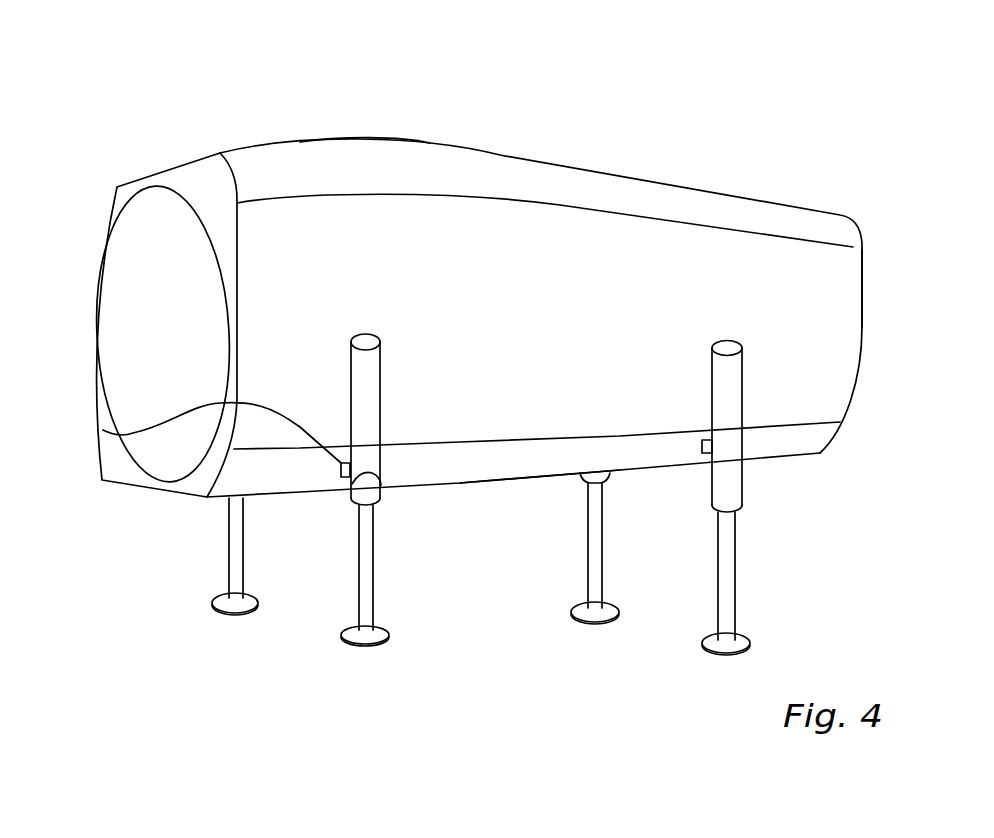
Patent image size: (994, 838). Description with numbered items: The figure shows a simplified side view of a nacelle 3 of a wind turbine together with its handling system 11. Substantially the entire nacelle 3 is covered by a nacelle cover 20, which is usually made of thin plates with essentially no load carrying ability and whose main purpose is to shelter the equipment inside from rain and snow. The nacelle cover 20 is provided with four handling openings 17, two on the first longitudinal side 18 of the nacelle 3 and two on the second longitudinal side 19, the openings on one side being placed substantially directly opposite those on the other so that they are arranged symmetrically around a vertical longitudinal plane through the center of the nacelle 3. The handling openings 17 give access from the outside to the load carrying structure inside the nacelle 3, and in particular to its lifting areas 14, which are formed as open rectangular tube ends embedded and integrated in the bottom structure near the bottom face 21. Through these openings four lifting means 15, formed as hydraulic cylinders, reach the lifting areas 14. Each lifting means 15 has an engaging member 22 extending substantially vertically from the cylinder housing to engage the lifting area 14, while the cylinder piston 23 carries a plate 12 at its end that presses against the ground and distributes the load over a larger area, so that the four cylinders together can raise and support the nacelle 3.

The nacelle 3 is at (600, 262).
The handling system 11 is at (149, 87).
The plate 12 is at (613, 612).
The lifting area 14 is at (103, 430).
The lifting means 15 is at (727, 492).
The handling opening 17 is at (342, 477).
The first longitudinal side 18 is at (780, 327).
The second longitudinal side 19 is at (97, 270).
The nacelle cover 20 is at (500, 156).
The bottom face 21 is at (470, 483).
The engaging member 22 is at (381, 485).
The piston 23 is at (365, 583).